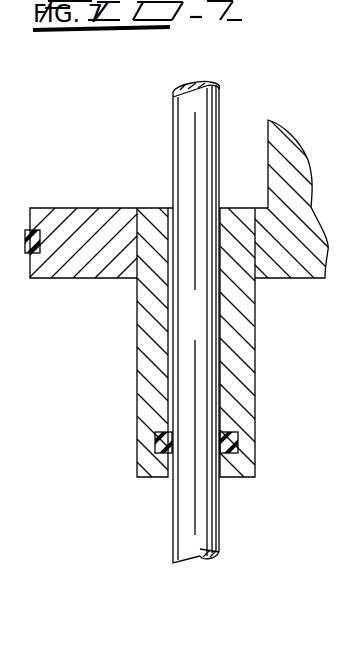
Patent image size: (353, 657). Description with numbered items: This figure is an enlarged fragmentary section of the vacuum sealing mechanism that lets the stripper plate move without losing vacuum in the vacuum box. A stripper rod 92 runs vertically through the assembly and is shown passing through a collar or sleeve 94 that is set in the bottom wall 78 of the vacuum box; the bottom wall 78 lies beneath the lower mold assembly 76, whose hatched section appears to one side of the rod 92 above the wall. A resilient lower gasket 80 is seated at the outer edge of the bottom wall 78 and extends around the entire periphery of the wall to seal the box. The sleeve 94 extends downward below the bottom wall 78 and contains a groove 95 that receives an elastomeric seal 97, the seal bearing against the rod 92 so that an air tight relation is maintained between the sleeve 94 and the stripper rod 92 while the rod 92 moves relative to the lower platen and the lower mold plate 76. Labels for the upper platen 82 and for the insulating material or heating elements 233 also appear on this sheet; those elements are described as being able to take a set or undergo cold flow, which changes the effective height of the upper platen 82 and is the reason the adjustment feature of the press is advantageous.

The lower mold assembly 76 is at (298, 173).
The bottom wall 78 is at (65, 213).
The lower gasket 80 is at (26, 242).
The upper platen 82 is at (352, 565).
The stripper rod 92 is at (190, 492).
The sleeve 94 is at (243, 418).
The groove 95 is at (155, 445).
The elastomeric seal 97 is at (238, 437).
The heating elements 233 is at (328, 472).